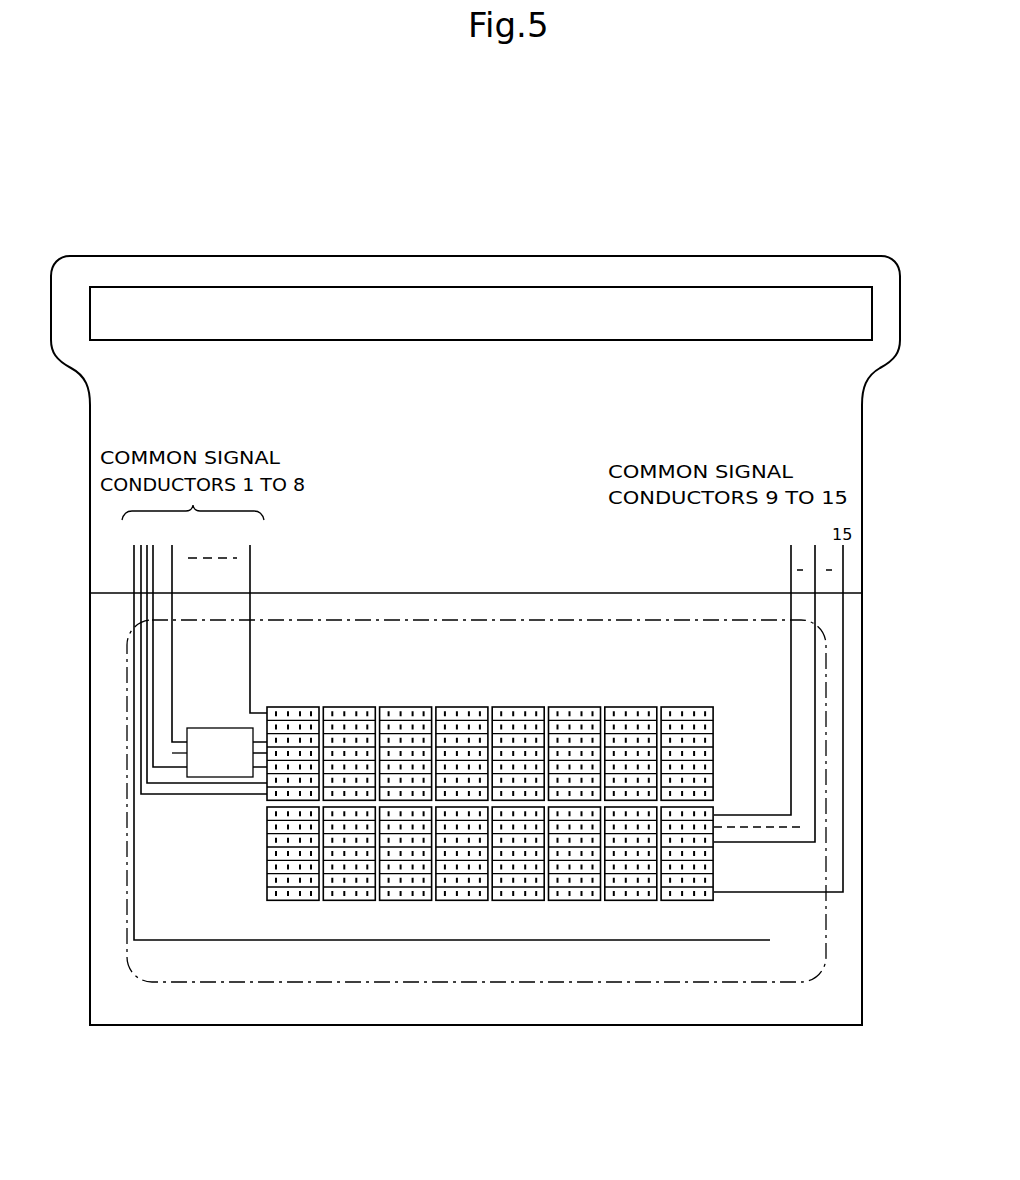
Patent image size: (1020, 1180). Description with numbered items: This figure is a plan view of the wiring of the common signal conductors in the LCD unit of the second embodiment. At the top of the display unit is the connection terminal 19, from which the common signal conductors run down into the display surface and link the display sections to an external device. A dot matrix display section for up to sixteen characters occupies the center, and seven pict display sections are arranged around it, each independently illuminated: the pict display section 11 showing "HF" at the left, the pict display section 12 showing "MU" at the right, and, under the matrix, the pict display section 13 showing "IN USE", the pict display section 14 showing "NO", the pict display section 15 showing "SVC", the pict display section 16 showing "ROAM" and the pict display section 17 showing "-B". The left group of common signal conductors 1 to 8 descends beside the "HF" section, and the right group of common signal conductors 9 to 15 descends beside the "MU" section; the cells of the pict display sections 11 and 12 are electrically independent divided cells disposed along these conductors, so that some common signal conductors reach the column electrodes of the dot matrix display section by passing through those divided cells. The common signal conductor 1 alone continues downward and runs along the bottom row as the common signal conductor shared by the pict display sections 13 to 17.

The connection terminal 19 is at (703, 316).
The common signal conductor 1 is at (448, 732).
The common signal conductor 8 is at (256, 619).
The common signal conductor 9 is at (753, 670).
The pict display section 11 is at (205, 728).
The pict display section 12 is at (737, 800).
The pict display section 13 is at (293, 960).
The pict display section 14 is at (415, 960).
The pict display section 15 is at (509, 960).
The pict display section 16 is at (648, 958).
The pict display section 17 is at (745, 960).